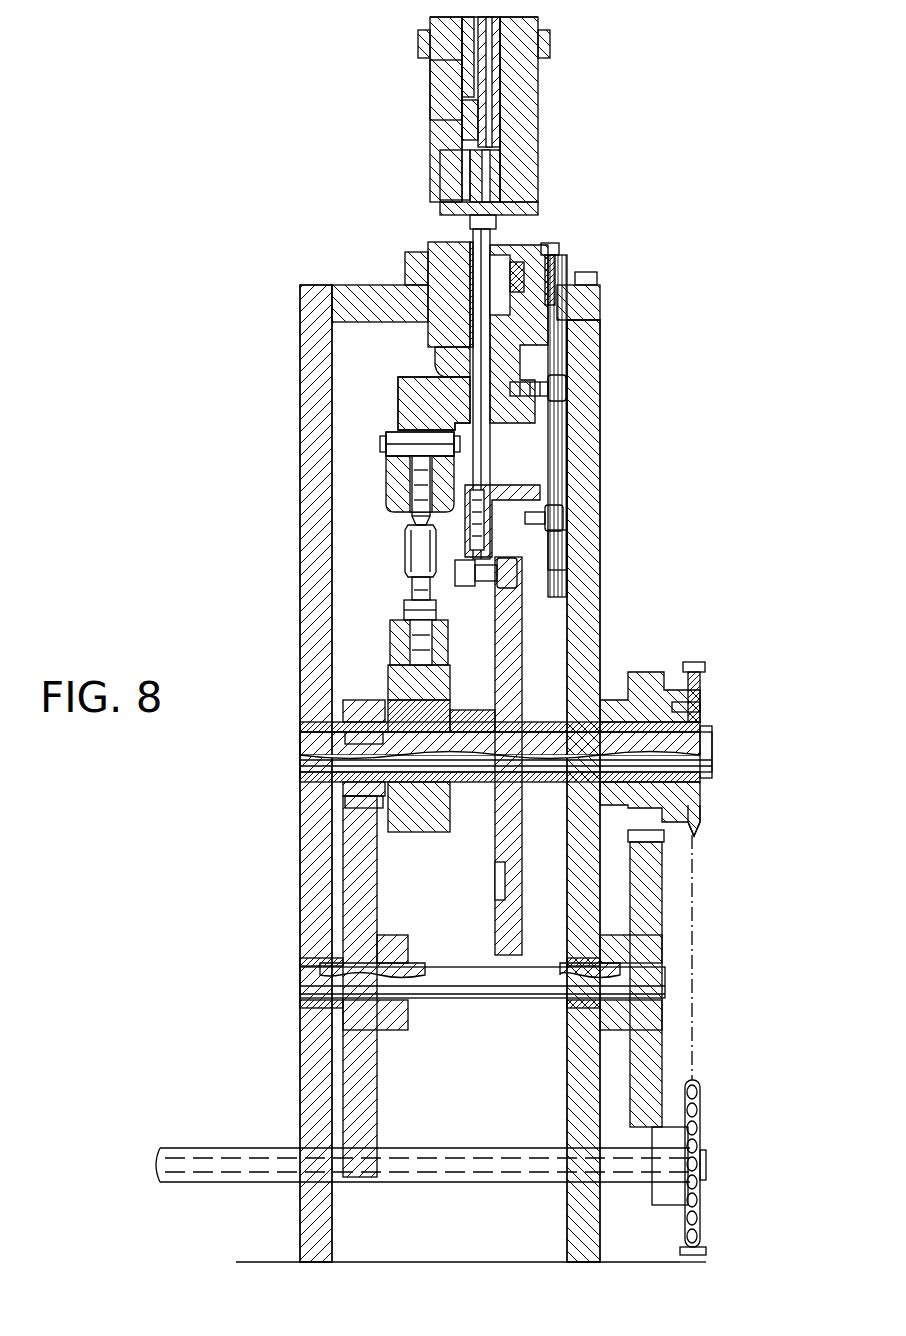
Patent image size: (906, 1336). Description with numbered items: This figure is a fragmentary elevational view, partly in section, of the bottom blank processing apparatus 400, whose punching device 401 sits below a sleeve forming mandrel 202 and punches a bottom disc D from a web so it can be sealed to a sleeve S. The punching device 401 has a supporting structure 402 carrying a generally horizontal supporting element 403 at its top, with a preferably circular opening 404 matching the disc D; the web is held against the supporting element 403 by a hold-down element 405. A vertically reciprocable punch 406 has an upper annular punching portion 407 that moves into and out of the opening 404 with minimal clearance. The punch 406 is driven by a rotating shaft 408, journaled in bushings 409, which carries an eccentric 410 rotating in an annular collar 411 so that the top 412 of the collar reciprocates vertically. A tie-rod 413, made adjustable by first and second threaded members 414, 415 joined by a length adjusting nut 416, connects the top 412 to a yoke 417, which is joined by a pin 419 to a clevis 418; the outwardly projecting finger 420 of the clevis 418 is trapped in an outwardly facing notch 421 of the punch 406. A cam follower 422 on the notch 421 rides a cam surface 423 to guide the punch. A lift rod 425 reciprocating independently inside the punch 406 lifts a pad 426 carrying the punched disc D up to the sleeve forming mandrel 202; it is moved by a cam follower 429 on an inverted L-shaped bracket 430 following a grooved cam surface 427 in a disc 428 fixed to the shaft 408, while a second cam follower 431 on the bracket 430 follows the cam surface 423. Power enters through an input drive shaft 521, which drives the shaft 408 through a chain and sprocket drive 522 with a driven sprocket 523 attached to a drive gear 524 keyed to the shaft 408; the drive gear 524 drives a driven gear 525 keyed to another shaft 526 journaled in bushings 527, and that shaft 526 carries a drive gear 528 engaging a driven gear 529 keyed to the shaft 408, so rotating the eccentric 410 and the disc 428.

The sleeve S is at (430, 98).
The bottom disc D is at (440, 190).
The sleeve forming mandrel 202 is at (512, 142).
The bottom blank processing apparatus 400 is at (280, 488).
The punching device 401 is at (302, 616).
The supporting structure 402 is at (302, 570).
The supporting element 403 is at (580, 285).
The opening 404 is at (555, 258).
The hold-down element 405 is at (420, 250).
The punch 406 is at (516, 272).
The annular punching portion 407 is at (497, 232).
The shaft 408 is at (302, 760).
The bushings 409 is at (302, 727).
The eccentric 410 is at (410, 705).
The annular collar 411 is at (410, 655).
The top of the annular collar 412 is at (415, 606).
The tie-rod 413 is at (418, 545).
The first threaded member 414 is at (418, 560).
The second threaded member 415 is at (410, 508).
The length adjusting nut 416 is at (400, 532).
The yoke 417 is at (400, 447).
The clevis 418 is at (400, 395).
The pin 419 is at (392, 440).
The outwardly projecting finger 420 is at (446, 357).
The outwardly facing notch 421 is at (440, 378).
The cam follower 422 is at (566, 386).
The cam surface 423 is at (562, 466).
The lift rod 425 is at (486, 458).
The pad 426 is at (515, 213).
The grooved cam surface 427 is at (512, 600).
The disc 428 is at (525, 660).
The cam follower 429 is at (500, 578).
The bracket 430 is at (562, 540).
The cam follower 431 is at (562, 517).
The input drive shaft 521 is at (260, 1165).
The chain and sprocket drive 522 is at (700, 935).
The driven sprocket 523 is at (705, 728).
The drive gear 524 is at (696, 834).
The driven gear 525 is at (660, 945).
The shaft 526 is at (470, 990).
The bushings 527 is at (320, 1005).
The drive gear 528 is at (356, 885).
The driven gear 529 is at (342, 708).